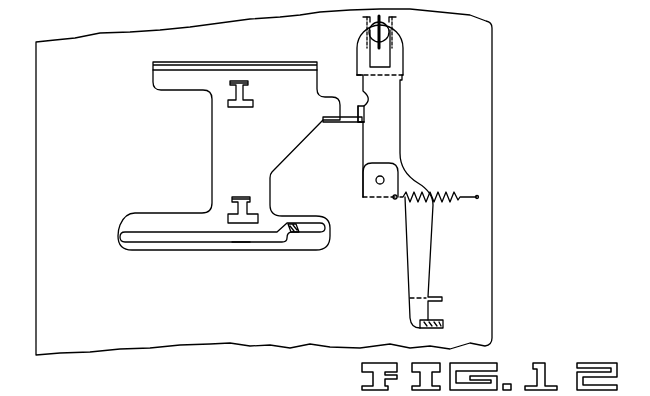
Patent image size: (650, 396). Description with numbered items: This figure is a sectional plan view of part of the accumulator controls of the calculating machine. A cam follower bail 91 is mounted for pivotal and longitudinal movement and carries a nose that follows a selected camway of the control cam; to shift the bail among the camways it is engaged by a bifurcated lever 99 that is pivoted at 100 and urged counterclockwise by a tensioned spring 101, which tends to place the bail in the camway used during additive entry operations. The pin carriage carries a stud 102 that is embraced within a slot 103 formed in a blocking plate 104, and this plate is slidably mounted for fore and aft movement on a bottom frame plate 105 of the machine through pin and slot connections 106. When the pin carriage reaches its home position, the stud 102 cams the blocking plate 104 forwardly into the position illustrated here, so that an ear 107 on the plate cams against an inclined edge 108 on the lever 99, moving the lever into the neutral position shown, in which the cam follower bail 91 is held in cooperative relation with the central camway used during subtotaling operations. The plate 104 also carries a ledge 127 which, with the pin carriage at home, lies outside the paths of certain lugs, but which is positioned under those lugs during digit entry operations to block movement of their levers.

The cam follower bail 91 is at (372, 23).
The bifurcated lever 99 is at (398, 112).
The pivot 100 is at (376, 180).
The tensioned spring 101 is at (450, 200).
The stud 102 is at (296, 233).
The slot 103 is at (240, 243).
The blocking plate 104 is at (212, 168).
The bottom frame plate 105 is at (262, 334).
The pin and slot connections 106 is at (247, 92).
The ear 107 is at (350, 124).
The inclined edge 108 is at (364, 96).
The ledge 127 is at (293, 62).